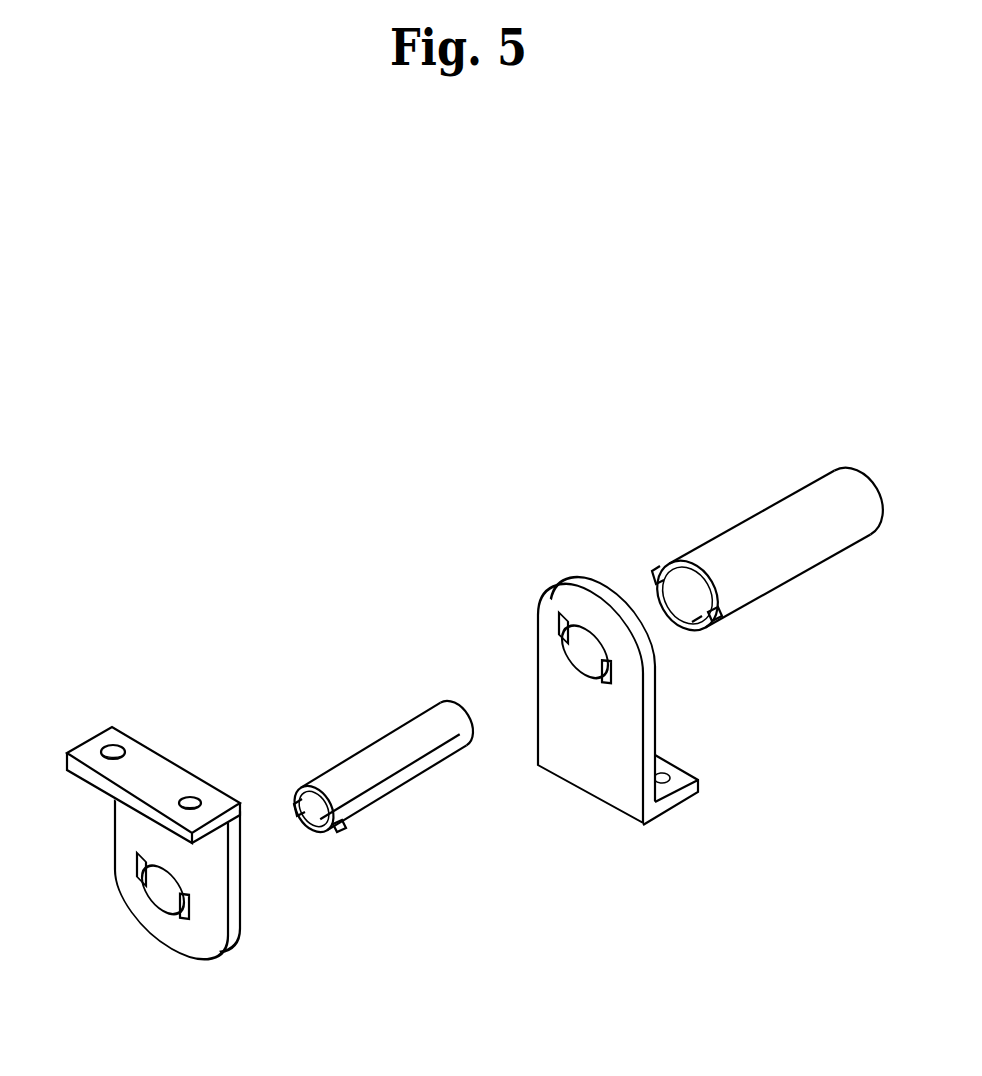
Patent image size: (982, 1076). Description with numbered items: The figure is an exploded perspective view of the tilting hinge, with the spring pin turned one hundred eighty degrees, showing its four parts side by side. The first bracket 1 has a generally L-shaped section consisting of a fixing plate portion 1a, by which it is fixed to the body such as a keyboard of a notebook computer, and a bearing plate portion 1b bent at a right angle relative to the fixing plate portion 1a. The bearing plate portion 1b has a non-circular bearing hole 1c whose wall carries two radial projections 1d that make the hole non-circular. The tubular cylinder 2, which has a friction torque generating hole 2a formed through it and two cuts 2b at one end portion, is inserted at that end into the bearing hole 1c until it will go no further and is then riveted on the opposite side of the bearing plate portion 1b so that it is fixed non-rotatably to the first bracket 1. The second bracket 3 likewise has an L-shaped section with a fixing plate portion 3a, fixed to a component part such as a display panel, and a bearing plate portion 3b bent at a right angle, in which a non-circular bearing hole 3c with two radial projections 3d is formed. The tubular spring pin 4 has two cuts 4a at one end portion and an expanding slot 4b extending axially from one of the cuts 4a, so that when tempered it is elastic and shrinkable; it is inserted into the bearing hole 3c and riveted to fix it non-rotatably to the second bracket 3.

The first bracket 1 is at (614, 677).
The fixing plate portion 1a is at (683, 773).
The bearing plate portion 1b is at (543, 680).
The non-circular bearing hole 1c is at (587, 637).
The projections 1d is at (570, 638).
The tubular cylinder 2 is at (764, 581).
The friction torque generating hole 2a is at (693, 621).
The cuts 2b is at (652, 575).
The second bracket 3 is at (169, 860).
The fixing plate portion 3a is at (117, 748).
The bearing plate portion 3b is at (195, 945).
The non-circular bearing hole 3c is at (165, 893).
The projections 3d is at (145, 880).
The tubular spring pin 4 is at (370, 770).
The cuts 4a is at (300, 800).
The expanding slot 4b is at (413, 772).